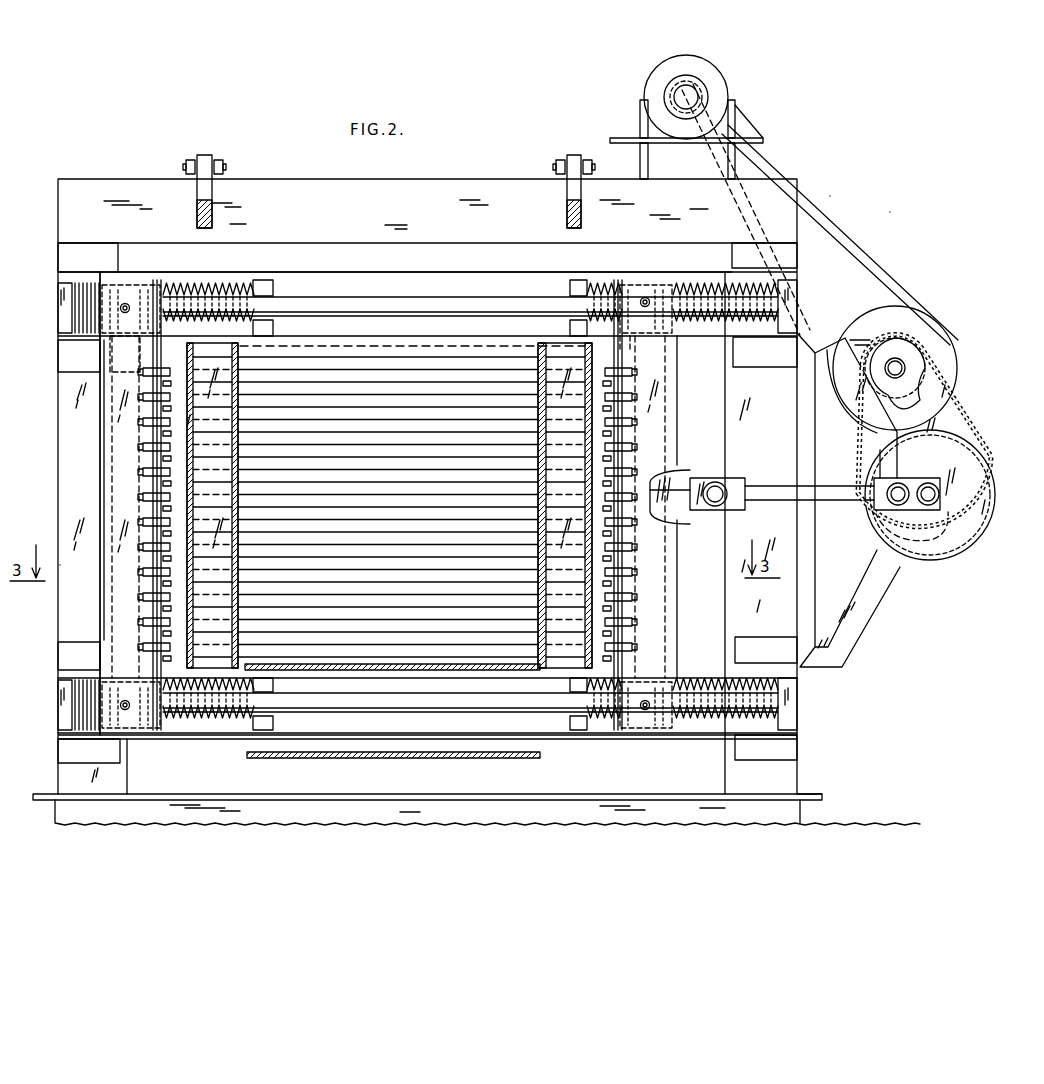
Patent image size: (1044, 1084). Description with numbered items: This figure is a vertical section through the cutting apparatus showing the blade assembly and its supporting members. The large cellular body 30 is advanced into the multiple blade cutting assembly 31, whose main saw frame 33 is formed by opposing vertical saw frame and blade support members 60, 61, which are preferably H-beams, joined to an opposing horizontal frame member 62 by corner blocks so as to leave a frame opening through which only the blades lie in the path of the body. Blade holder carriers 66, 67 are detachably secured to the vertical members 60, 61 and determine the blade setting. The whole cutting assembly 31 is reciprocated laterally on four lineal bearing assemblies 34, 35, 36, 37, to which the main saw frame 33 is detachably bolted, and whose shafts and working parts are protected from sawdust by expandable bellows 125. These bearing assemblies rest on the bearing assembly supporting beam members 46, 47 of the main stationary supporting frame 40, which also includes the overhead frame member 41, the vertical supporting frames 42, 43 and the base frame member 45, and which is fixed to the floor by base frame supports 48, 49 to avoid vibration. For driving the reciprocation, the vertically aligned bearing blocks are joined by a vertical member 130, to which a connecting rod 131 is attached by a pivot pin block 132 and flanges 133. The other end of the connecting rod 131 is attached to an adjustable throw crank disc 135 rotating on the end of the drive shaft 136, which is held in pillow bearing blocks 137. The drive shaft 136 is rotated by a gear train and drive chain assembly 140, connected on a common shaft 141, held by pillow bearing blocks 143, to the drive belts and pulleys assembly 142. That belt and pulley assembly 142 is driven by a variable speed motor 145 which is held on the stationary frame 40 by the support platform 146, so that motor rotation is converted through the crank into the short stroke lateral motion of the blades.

The cellular body 30 is at (393, 346).
The multiple blade cutting assembly 31 is at (428, 358).
The main saw frame 33 is at (84, 387).
The lineal bearing assembly 34 is at (557, 291).
The lineal bearing assembly 35 is at (552, 688).
The lineal bearing assembly 36 is at (282, 688).
The lineal bearing assembly 37 is at (282, 292).
The main stationary supporting frame 40 is at (92, 170).
The overhead frame member 41 is at (143, 190).
The vertical supporting frame 42 is at (780, 372).
The vertical supporting frame 43 is at (58, 410).
The base frame member 45 is at (622, 794).
The bearing assembly supporting beam member 46 is at (476, 286).
The bearing assembly supporting beam member 47 is at (205, 730).
The base frame support 48 is at (818, 793).
The base frame support 49 is at (36, 794).
The vertical saw frame and blade support member 60 is at (677, 396).
The vertical saw frame and blade support member 61 is at (104, 444).
The horizontal frame member 62 is at (362, 298).
The blade holder carrier 66 is at (622, 345).
The blade holder carrier 67 is at (157, 350).
The bellows 125 is at (700, 672).
The vertical member 130 is at (695, 512).
The connecting rod 131 is at (770, 485).
The pivot pin block 132 is at (707, 480).
The flanges 133 is at (672, 475).
The adjustable throw crank disc 135 is at (975, 535).
The drive shaft 136 is at (928, 483).
The pillow bearing blocks 137 is at (911, 526).
The gear train and drive chain assembly 140 is at (984, 472).
The common shaft 141 is at (902, 362).
The drive belts and pulleys assembly 142 is at (918, 269).
The pillow bearing blocks 143 is at (892, 348).
The variable speed motor 145 is at (726, 85).
The support platform 146 is at (737, 156).